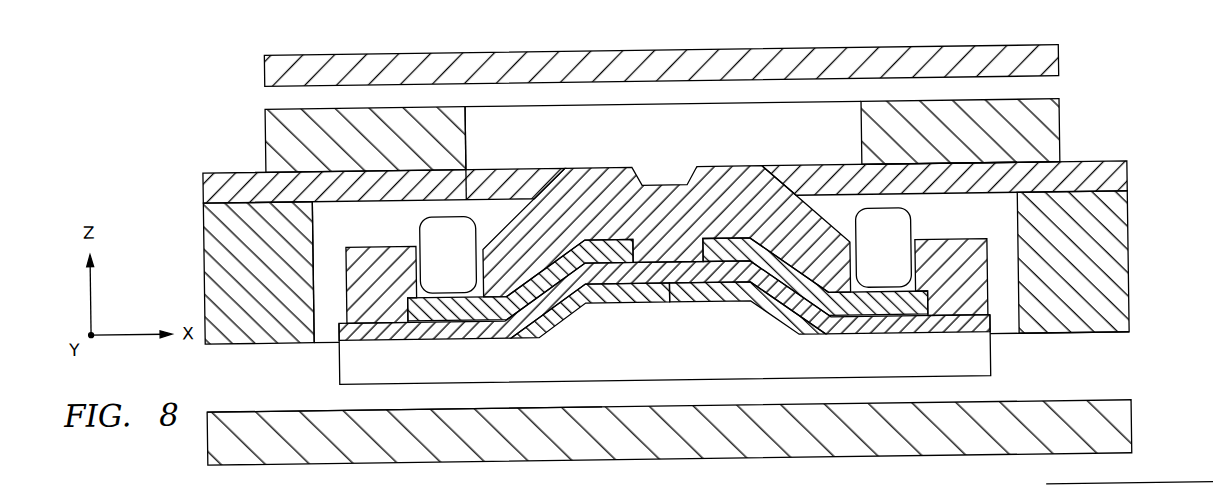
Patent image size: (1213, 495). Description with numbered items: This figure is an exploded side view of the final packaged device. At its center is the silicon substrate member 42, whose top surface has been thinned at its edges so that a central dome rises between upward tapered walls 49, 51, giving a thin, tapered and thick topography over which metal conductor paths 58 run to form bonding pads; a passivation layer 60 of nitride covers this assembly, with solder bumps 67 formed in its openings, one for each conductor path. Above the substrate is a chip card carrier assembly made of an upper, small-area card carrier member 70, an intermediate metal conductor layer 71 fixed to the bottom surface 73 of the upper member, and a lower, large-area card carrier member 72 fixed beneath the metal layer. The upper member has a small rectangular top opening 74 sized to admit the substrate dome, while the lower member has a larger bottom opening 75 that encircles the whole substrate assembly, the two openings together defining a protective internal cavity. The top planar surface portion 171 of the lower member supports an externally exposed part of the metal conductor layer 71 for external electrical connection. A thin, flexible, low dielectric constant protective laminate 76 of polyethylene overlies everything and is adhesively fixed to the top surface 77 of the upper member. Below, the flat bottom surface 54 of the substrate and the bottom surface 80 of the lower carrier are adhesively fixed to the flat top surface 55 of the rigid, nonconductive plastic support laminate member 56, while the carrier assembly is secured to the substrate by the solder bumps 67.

The silicon substrate member 42 is at (990, 352).
The upward tapered wall 49 is at (783, 330).
The upward tapered wall 51 is at (548, 320).
The bottom surface 54 is at (940, 380).
The top surface 55 is at (323, 404).
The support laminate member 56 is at (1130, 428).
The metal conductor path 58 is at (578, 248).
The passivation layer 60 is at (812, 202).
The solder bump 67 is at (476, 227).
The upper card carrier member 70 is at (1058, 131).
The metal conductor layer 71 is at (1130, 172).
The lower card carrier member 72 is at (1128, 289).
The bottom surface 73 is at (925, 166).
The top opening 74 is at (569, 149).
The bottom opening 75 is at (326, 231).
The protective laminate 76 is at (866, 51).
The top surface 77 is at (1048, 103).
The bottom surface 80 is at (1097, 340).
The top planar surface portion 171 is at (1120, 239).